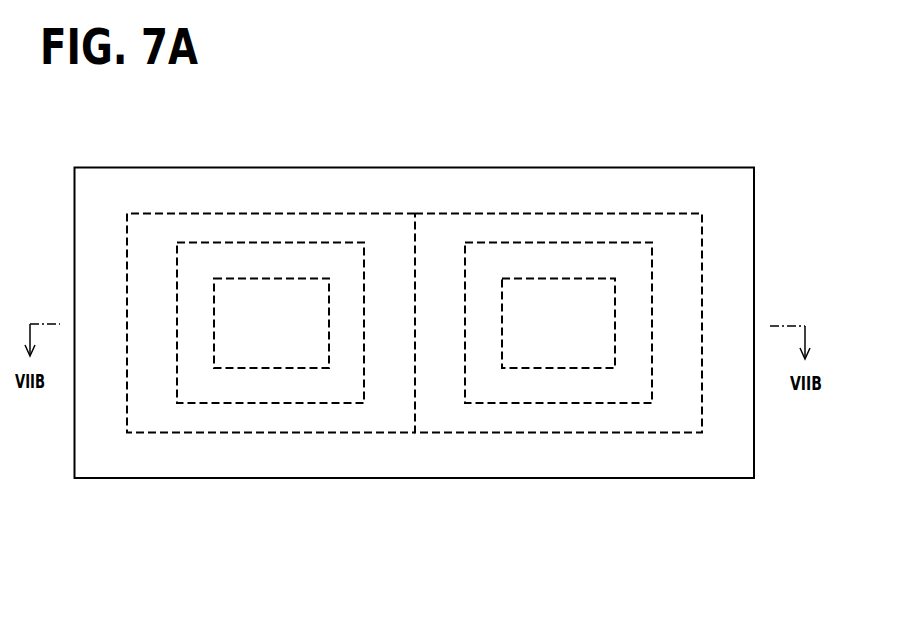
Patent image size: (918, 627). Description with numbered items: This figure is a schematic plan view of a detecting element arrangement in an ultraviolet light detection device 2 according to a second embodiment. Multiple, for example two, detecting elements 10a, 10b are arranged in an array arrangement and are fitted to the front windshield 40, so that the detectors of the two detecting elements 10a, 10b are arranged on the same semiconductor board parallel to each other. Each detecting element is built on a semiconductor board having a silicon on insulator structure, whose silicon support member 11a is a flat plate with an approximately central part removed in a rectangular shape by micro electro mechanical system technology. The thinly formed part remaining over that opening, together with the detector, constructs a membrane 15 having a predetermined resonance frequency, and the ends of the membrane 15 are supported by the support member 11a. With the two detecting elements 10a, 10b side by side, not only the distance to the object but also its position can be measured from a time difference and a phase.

The ultraviolet light detection device 2 is at (387, 498).
The front windshield 40 is at (754, 221).
The detecting element 10a is at (127, 417).
The detecting element 10b is at (504, 433).
The support member 11a is at (154, 413).
The membrane 15 is at (233, 353).